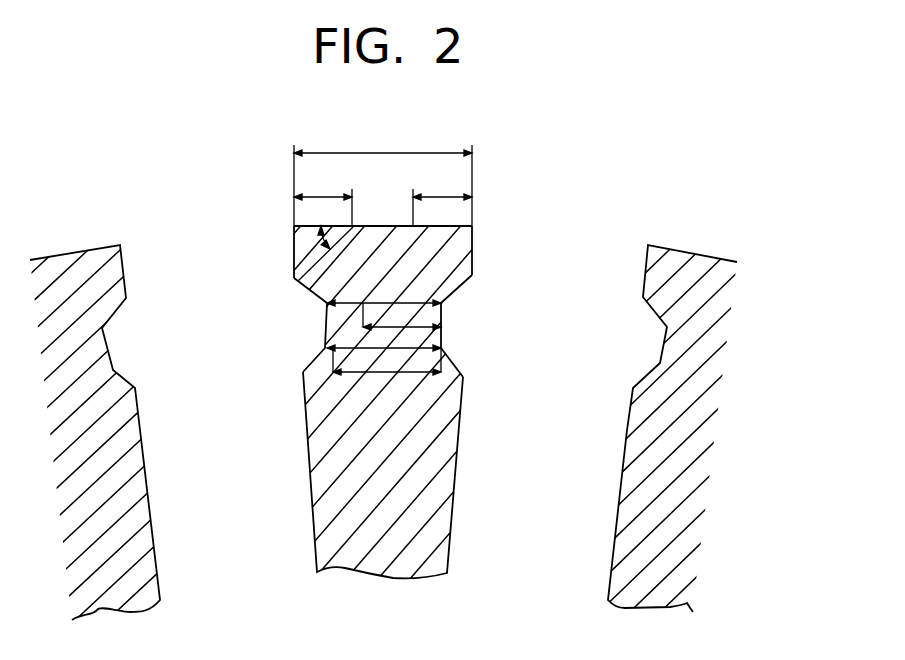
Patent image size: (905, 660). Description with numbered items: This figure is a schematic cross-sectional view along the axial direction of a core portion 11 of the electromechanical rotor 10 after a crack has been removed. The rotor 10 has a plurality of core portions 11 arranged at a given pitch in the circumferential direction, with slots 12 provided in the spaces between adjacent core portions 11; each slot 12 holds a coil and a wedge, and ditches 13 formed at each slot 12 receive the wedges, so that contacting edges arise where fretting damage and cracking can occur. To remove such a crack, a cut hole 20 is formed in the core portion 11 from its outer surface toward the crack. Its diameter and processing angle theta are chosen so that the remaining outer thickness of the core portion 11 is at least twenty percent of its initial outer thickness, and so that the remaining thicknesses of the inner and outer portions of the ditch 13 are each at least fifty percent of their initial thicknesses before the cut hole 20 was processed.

The electromechanical rotor 10 is at (147, 197).
The core portion 11 is at (453, 253).
The slot 12 is at (203, 285).
The ditch 13 is at (308, 330).
The cut hole 20 is at (380, 240).